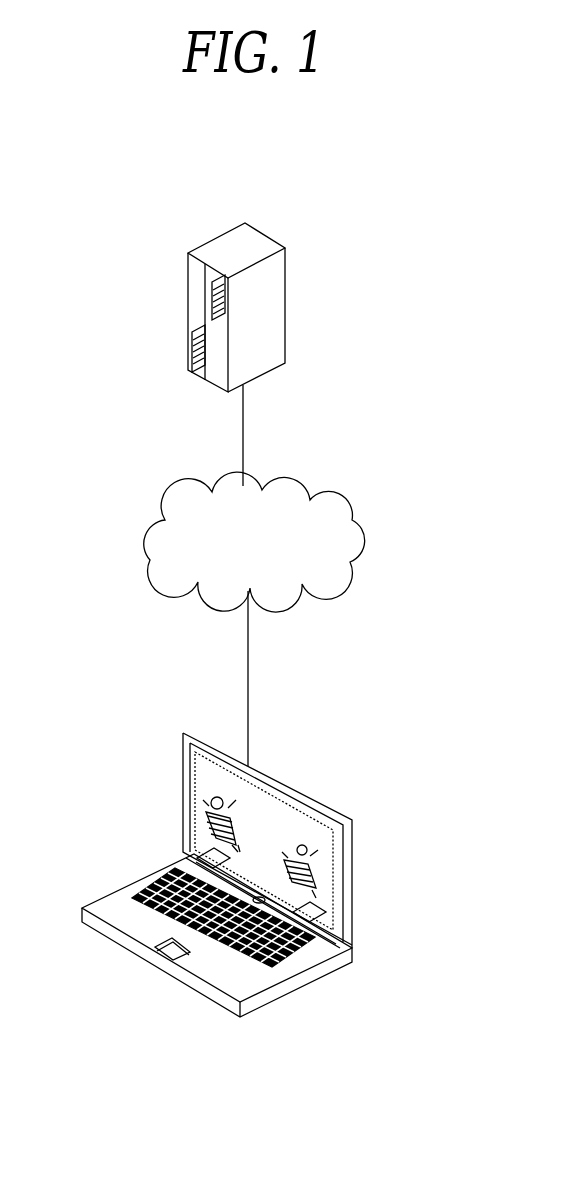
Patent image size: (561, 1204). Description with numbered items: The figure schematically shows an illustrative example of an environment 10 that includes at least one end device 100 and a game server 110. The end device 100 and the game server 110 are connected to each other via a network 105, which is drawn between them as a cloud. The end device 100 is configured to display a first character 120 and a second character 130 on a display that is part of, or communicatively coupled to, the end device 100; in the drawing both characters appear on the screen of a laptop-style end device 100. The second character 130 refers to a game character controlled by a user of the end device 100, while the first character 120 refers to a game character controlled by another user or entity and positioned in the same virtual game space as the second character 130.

The environment 10 is at (262, 146).
The end device 100 is at (293, 983).
The network 105 is at (298, 492).
The game server 110 is at (265, 232).
The first character 120 is at (208, 827).
The second character 130 is at (308, 867).